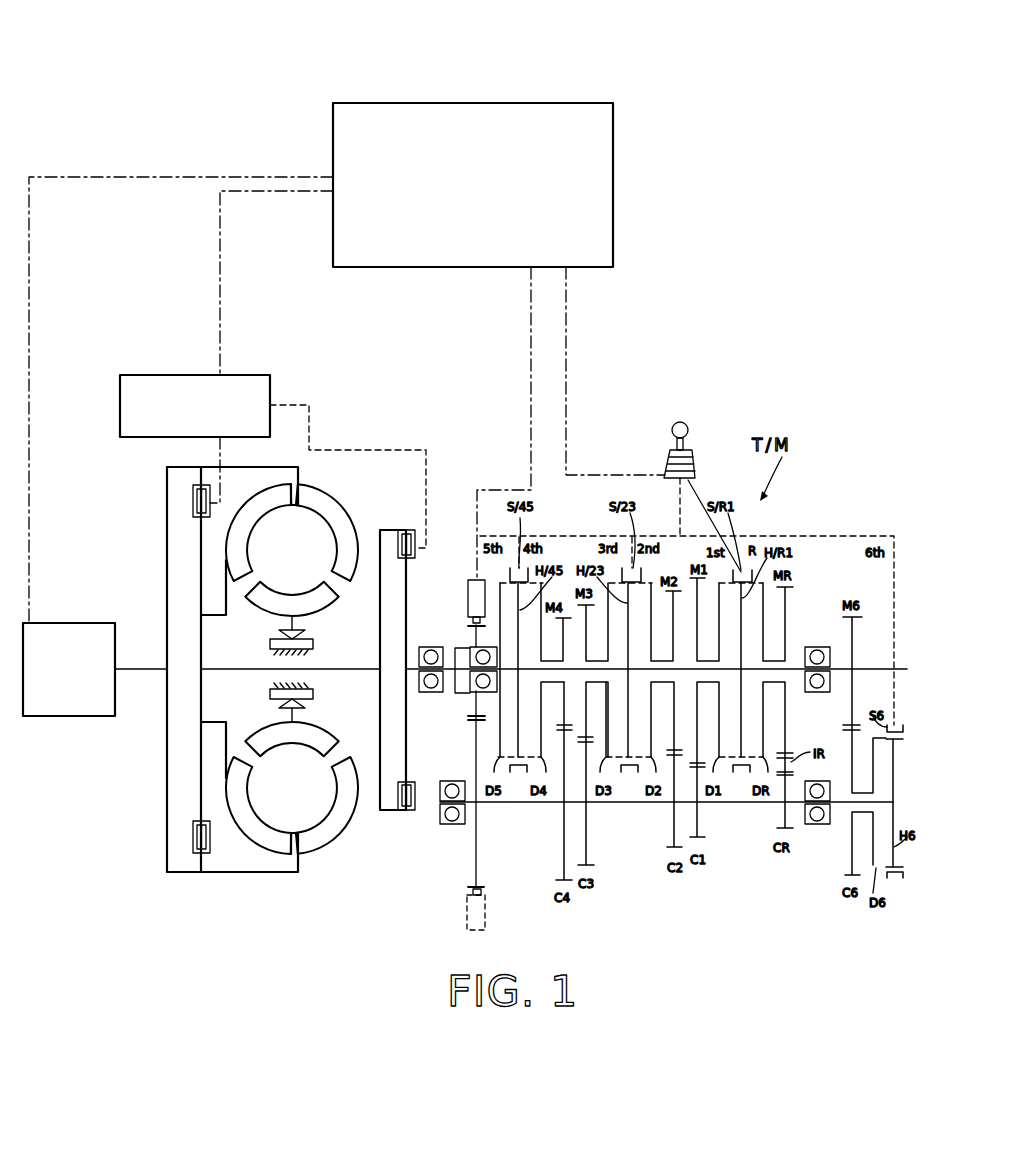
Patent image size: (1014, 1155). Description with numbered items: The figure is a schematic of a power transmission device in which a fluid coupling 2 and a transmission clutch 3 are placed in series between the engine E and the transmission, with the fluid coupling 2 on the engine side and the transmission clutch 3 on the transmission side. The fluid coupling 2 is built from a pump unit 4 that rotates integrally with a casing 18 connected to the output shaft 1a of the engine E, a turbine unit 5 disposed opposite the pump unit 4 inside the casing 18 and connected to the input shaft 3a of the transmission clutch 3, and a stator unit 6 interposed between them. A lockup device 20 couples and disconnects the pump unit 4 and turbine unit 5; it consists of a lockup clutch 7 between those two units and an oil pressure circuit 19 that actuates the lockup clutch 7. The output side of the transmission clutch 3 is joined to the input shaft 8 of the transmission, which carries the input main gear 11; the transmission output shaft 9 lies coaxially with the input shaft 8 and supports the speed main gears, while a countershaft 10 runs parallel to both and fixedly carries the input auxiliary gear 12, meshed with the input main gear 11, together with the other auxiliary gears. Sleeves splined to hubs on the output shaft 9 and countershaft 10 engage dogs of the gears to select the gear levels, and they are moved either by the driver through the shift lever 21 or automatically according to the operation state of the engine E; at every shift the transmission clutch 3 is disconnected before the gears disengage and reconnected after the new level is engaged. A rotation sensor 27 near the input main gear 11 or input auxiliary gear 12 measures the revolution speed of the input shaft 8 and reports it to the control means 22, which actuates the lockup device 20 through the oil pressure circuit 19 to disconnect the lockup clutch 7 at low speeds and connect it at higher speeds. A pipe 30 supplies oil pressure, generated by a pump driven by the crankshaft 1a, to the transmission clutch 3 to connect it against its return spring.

The output shaft 1a is at (133, 668).
The fluid coupling 2 is at (322, 856).
The transmission clutch 3 is at (397, 814).
The input shaft 3a is at (341, 670).
The pump unit 4 is at (342, 505).
The turbine unit 5 is at (270, 484).
The stator unit 6 is at (326, 607).
The lockup clutch 7 is at (193, 503).
The input shaft 8 is at (413, 667).
The output shaft 9 is at (862, 668).
The countershaft 10 is at (518, 805).
The input main gear 11 is at (468, 710).
The input auxiliary gear 12 is at (476, 885).
The casing 18 is at (248, 873).
The oil pressure circuit 19 is at (119, 393).
The lockup device 20 is at (224, 675).
The shift lever 21 is at (672, 428).
The control means 22 is at (613, 172).
The rotation sensor 27 is at (468, 603).
The pipe 30 is at (380, 450).
The engine E is at (48, 623).